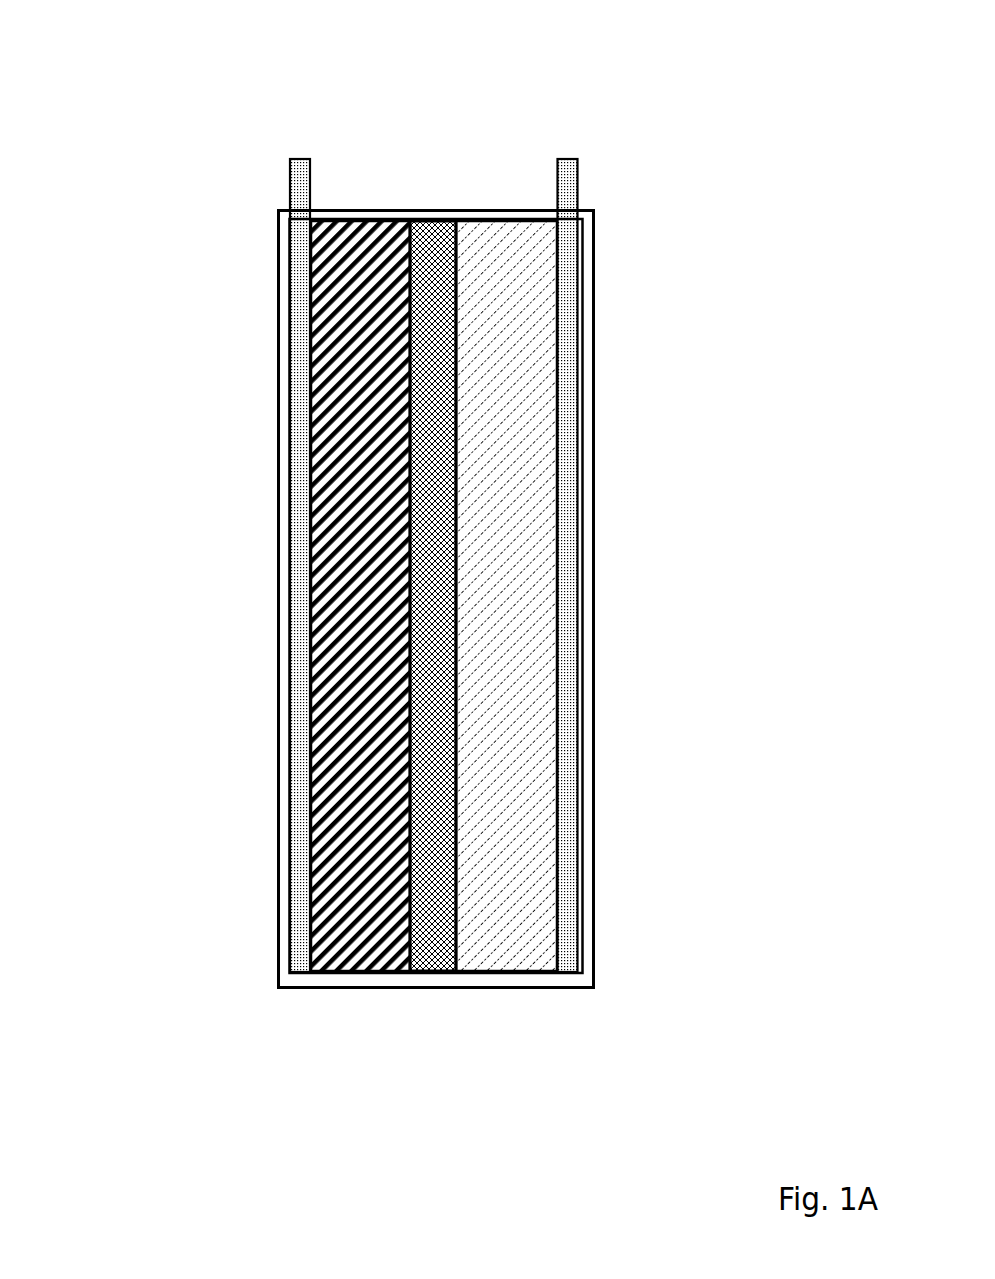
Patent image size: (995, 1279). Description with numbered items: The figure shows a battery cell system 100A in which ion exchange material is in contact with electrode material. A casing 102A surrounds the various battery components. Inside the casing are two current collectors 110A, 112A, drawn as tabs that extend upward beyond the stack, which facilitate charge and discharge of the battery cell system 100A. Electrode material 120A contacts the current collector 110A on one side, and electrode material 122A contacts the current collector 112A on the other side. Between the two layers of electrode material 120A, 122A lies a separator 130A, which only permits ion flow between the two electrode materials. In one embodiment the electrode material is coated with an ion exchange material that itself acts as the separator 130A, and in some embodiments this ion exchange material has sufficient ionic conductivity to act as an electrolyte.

The battery cell system 100A is at (116, 80).
The casing 102A is at (273, 499).
The current collector 110A is at (287, 193).
The current collector 112A is at (582, 190).
The electrode material 120A is at (346, 250).
The separator 130A is at (427, 237).
The electrode material 122A is at (490, 253).